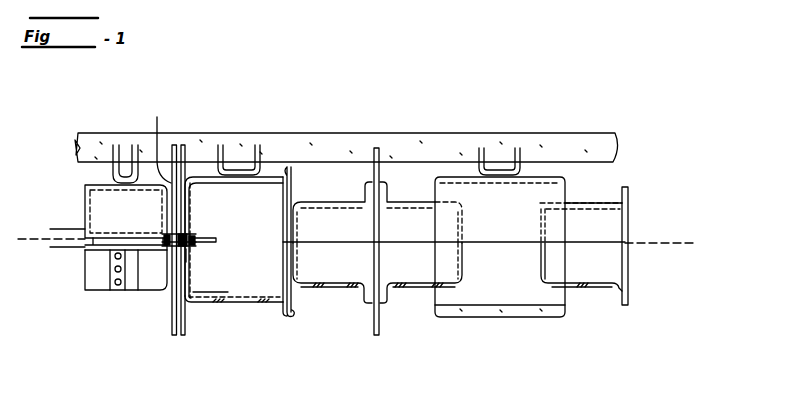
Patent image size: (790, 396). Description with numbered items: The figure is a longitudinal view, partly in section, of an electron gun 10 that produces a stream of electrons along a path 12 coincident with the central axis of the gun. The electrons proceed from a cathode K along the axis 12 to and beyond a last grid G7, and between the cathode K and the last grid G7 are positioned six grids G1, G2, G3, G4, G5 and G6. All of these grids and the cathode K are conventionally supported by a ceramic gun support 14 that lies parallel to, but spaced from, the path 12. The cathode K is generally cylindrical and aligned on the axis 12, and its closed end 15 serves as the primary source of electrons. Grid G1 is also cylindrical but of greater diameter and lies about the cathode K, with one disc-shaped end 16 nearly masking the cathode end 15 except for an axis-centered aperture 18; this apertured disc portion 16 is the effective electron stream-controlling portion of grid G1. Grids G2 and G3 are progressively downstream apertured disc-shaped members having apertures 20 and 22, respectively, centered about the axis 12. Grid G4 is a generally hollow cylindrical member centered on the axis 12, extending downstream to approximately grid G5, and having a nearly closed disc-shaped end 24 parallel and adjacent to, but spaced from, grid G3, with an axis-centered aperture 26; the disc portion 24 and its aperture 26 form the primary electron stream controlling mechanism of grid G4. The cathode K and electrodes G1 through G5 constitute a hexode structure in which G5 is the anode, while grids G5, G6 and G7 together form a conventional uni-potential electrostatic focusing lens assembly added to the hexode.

The electron gun 10 is at (384, 118).
The path or axis 12 is at (34, 239).
The ceramic gun support 14 is at (438, 142).
The closed end of cathode 15 is at (184, 253).
The disc-shaped end of grid G1 16 is at (160, 141).
The aperture 18 is at (214, 241).
The aperture of grid G2 20 is at (188, 238).
The aperture of grid G3 22 is at (193, 239).
The disc-shaped end of grid G4 24 is at (220, 292).
The aperture of grid G4 26 is at (193, 246).
The cathode K is at (138, 295).
The first grid G1 is at (157, 297).
The second grid G2 is at (173, 335).
The third grid G3 is at (184, 335).
The fourth grid G4 is at (239, 259).
The fifth grid G5 is at (380, 300).
The sixth grid G6 is at (505, 318).
The seventh grid G7 is at (597, 287).